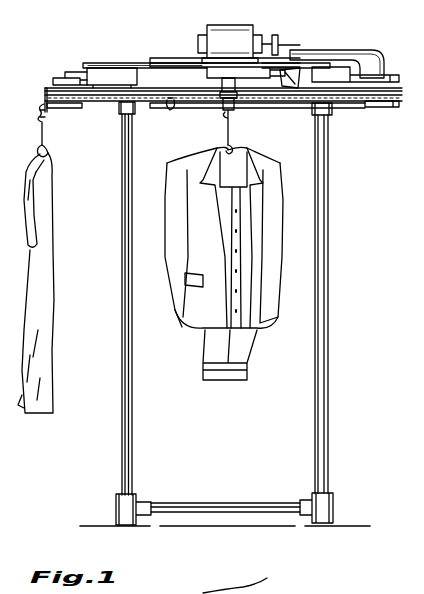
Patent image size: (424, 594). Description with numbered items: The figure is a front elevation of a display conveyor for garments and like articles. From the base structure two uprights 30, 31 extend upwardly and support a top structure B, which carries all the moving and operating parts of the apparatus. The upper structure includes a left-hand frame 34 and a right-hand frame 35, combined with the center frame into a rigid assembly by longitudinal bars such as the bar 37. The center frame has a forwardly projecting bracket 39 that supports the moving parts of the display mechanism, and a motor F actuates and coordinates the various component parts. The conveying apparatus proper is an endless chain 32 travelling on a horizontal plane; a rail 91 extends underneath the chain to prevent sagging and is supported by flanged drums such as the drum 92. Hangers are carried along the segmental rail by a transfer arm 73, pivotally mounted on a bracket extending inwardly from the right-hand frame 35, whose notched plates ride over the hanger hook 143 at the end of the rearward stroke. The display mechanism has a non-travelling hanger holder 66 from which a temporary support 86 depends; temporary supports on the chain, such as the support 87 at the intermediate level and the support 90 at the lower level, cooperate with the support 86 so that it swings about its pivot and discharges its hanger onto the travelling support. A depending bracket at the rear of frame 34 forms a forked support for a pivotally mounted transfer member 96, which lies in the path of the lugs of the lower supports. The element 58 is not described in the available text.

The upright 30 is at (134, 160).
The upright 31 is at (328, 187).
The endless chain 32 is at (107, 101).
The left-hand frame 34 is at (65, 72).
The right-hand frame 35 is at (396, 76).
The longitudinal bar 37 is at (150, 63).
The forwardly projecting bracket 39 is at (196, 63).
The element 58 is at (243, 581).
The hanger holder 66 is at (226, 98).
The transfer arm 73 is at (387, 63).
The temporary support 86 is at (234, 112).
The temporary support 87 is at (177, 115).
The temporary support 90 is at (38, 110).
The rail 91 is at (292, 103).
The flanged drum 92 is at (392, 107).
The transfer member 96 is at (70, 108).
The hanger hook 143 is at (231, 146).
The motor F is at (243, 26).
The top structure B is at (129, 79).